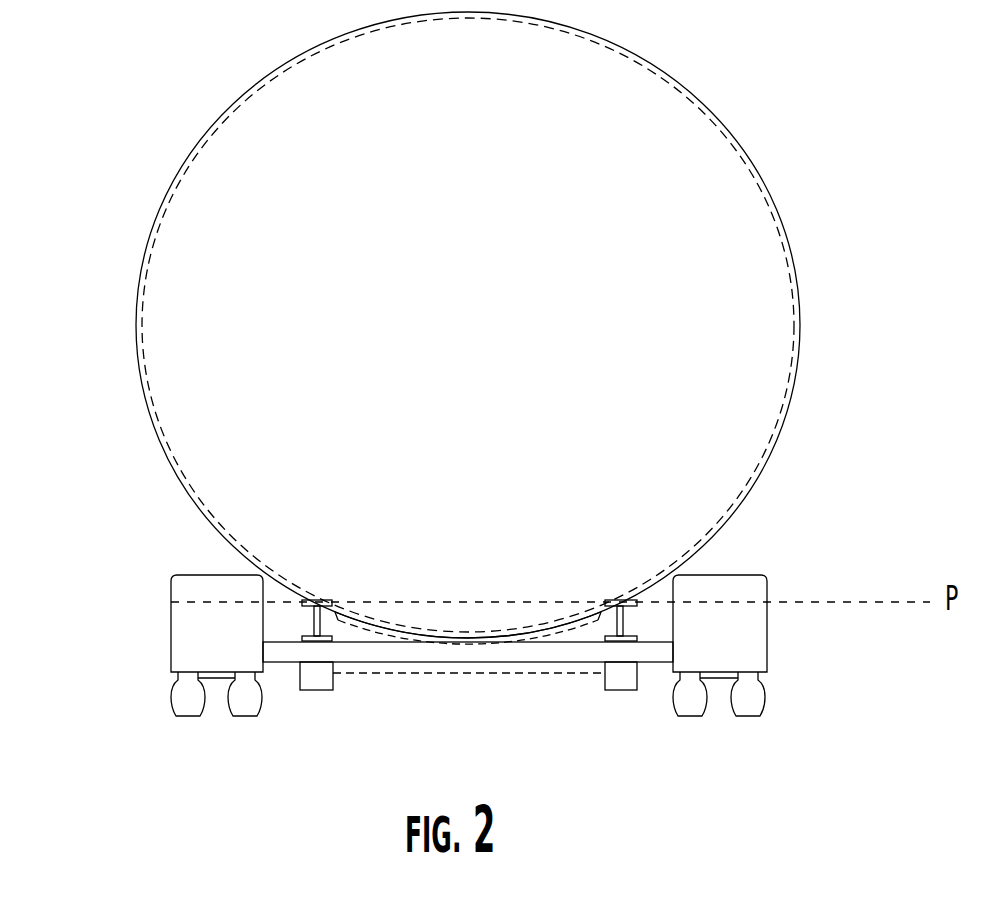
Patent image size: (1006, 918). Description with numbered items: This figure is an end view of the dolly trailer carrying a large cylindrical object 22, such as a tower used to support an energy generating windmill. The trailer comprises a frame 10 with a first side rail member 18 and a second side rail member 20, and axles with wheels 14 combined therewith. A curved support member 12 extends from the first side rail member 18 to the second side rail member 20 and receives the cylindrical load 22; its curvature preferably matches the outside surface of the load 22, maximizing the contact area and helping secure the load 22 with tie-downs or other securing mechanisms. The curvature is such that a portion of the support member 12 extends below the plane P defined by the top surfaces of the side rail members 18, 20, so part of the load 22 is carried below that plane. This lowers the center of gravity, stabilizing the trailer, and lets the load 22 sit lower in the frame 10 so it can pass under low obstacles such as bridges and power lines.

The frame 10 is at (370, 652).
The curved support member 12 is at (523, 642).
The wheels 14 is at (752, 705).
The first side rail member 18 is at (302, 600).
The second side rail member 20 is at (640, 600).
The cylindrical object 22 is at (482, 358).